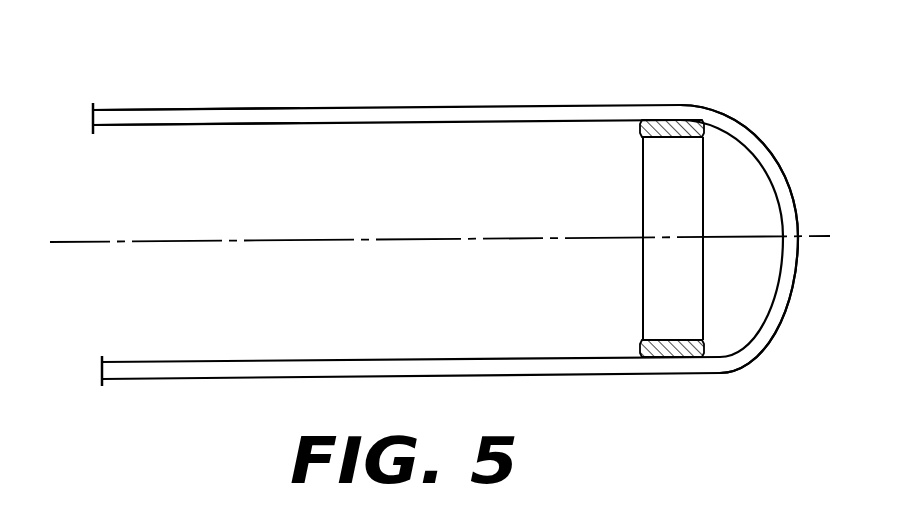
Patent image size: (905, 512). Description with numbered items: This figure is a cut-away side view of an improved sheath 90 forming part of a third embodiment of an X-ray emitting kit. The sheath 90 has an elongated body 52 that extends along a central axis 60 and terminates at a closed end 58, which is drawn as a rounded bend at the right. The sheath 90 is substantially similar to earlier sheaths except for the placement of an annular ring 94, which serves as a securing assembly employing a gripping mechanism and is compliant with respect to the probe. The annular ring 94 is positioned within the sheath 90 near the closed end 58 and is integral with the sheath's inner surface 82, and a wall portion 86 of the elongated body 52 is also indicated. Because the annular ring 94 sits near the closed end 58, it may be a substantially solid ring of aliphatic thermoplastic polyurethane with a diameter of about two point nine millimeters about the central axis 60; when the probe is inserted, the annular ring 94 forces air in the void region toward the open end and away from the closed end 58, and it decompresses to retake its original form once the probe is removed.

The sheath 90 is at (346, 50).
The upper tube wall 86 is at (182, 108).
The elongated body 52 is at (287, 115).
The closed end 58 is at (775, 127).
The inner surface 82 is at (170, 127).
The central axis 60 is at (143, 242).
The annular ring 94 is at (660, 305).